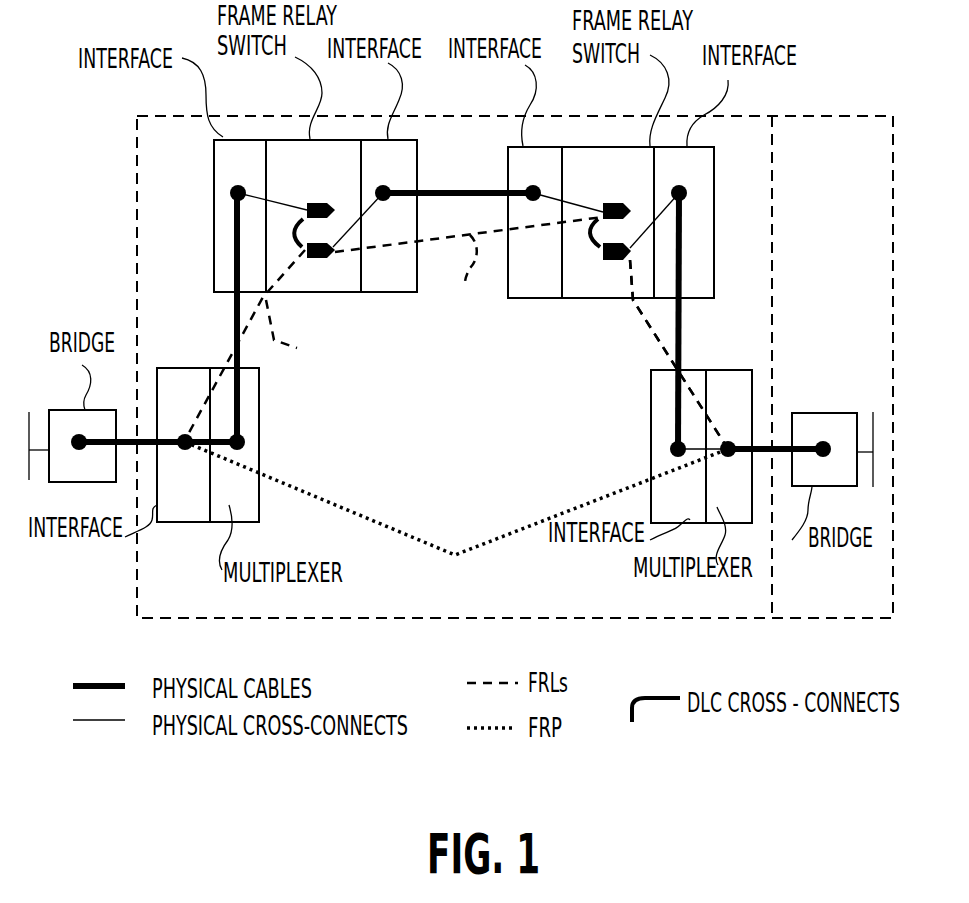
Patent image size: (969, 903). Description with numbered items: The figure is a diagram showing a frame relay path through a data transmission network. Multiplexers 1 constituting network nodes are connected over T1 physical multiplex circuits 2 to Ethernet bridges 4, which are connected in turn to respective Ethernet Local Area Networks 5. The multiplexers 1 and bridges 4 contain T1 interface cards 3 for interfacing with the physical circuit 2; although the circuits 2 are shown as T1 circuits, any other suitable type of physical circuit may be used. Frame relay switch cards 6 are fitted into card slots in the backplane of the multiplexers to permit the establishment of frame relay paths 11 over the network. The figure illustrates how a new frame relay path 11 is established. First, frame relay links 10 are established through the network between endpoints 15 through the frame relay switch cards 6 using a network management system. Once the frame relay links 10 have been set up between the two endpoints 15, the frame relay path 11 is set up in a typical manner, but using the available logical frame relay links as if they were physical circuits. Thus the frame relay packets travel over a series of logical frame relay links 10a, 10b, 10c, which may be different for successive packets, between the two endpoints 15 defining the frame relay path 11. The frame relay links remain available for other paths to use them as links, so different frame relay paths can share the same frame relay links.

The multiplexer 1 is at (342, 140).
The physical multiplex circuit 2 is at (445, 193).
The T1 interface card 3 is at (713, 193).
The Ethernet bridge 4 is at (77, 478).
The Ethernet Local Area Network 5 is at (29, 432).
The frame relay switch card 6 is at (291, 140).
The frame relay link 10 is at (432, 254).
The logical frame relay link 10a is at (653, 327).
The logical frame relay link 10b is at (488, 279).
The logical frame relay link 10c is at (312, 329).
The frame relay path 11 is at (510, 534).
The endpoint 15 is at (185, 458).